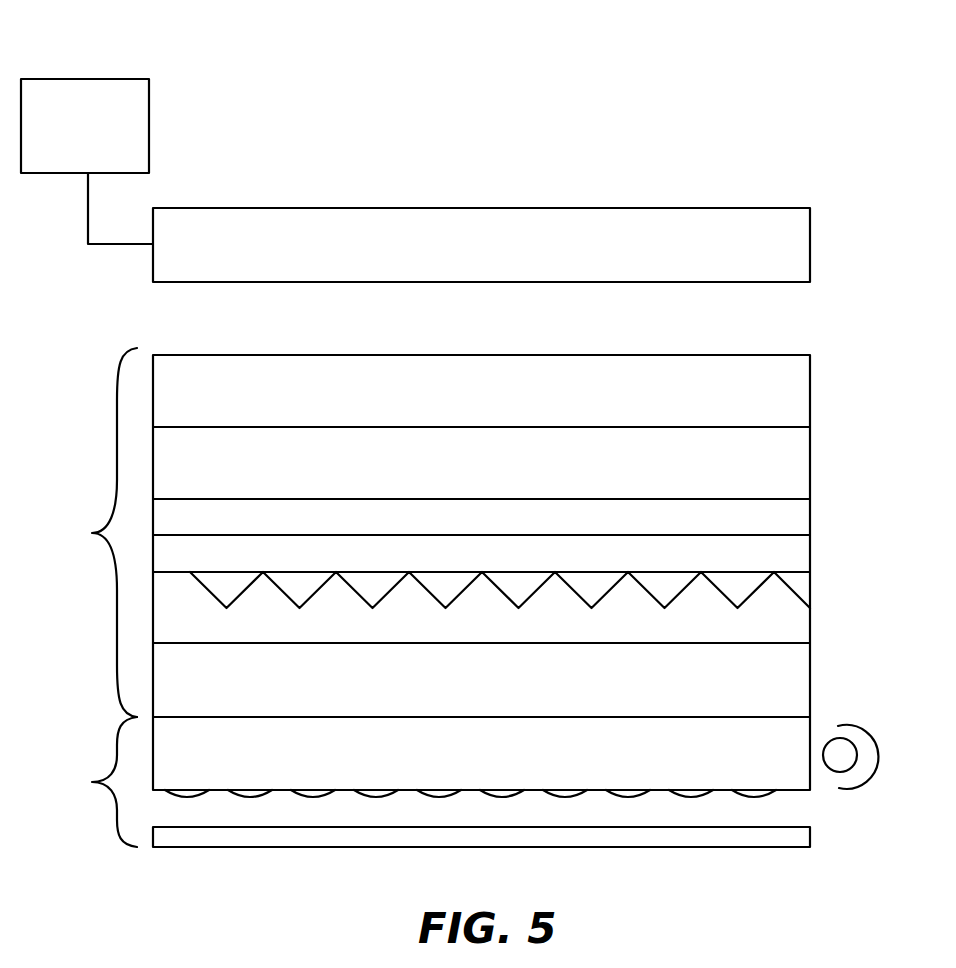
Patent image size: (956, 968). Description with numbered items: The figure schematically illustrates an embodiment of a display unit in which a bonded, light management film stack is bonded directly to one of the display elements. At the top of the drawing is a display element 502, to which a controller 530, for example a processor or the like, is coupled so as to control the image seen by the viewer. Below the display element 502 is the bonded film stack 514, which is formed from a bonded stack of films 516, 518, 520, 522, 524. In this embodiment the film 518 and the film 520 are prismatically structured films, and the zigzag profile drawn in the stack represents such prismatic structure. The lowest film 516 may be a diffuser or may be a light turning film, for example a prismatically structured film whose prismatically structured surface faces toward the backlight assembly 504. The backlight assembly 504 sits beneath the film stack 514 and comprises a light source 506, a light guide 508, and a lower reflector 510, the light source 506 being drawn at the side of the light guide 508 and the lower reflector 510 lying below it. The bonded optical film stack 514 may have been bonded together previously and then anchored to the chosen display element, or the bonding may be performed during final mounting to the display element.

The controller 530 is at (72, 79).
The display element 502 is at (812, 251).
The film 524 is at (812, 393).
The film 522 is at (812, 462).
The prismatically structured film 520 is at (812, 517).
The prismatically structured film 518 is at (812, 622).
The film 516 is at (812, 680).
The light guide 508 is at (812, 731).
The light source 506 is at (842, 763).
The backlight assembly 504 is at (92, 782).
The lower reflector 510 is at (275, 847).
The bonded film stack 514 is at (92, 533).